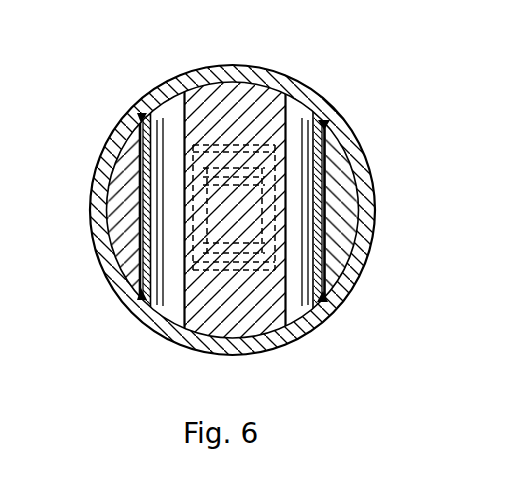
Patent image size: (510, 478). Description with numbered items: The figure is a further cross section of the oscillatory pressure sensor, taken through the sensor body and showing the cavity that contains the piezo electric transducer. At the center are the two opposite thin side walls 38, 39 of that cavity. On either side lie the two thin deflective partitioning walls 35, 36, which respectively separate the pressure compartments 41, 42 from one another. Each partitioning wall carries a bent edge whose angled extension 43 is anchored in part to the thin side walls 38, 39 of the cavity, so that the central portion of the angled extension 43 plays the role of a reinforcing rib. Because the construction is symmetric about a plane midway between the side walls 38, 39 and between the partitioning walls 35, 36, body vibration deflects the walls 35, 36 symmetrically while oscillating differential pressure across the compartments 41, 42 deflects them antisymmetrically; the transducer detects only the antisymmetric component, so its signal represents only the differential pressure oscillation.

The thin deflective partitioning wall 35 is at (138, 180).
The thin deflective partitioning wall 36 is at (340, 170).
The thin side wall of the cavity 38 is at (191, 172).
The thin side wall of the cavity 39 is at (282, 172).
The pressure compartment 41 is at (138, 219).
The pressure compartment 42 is at (172, 263).
The angled extension of the bent edge 43 is at (293, 254).